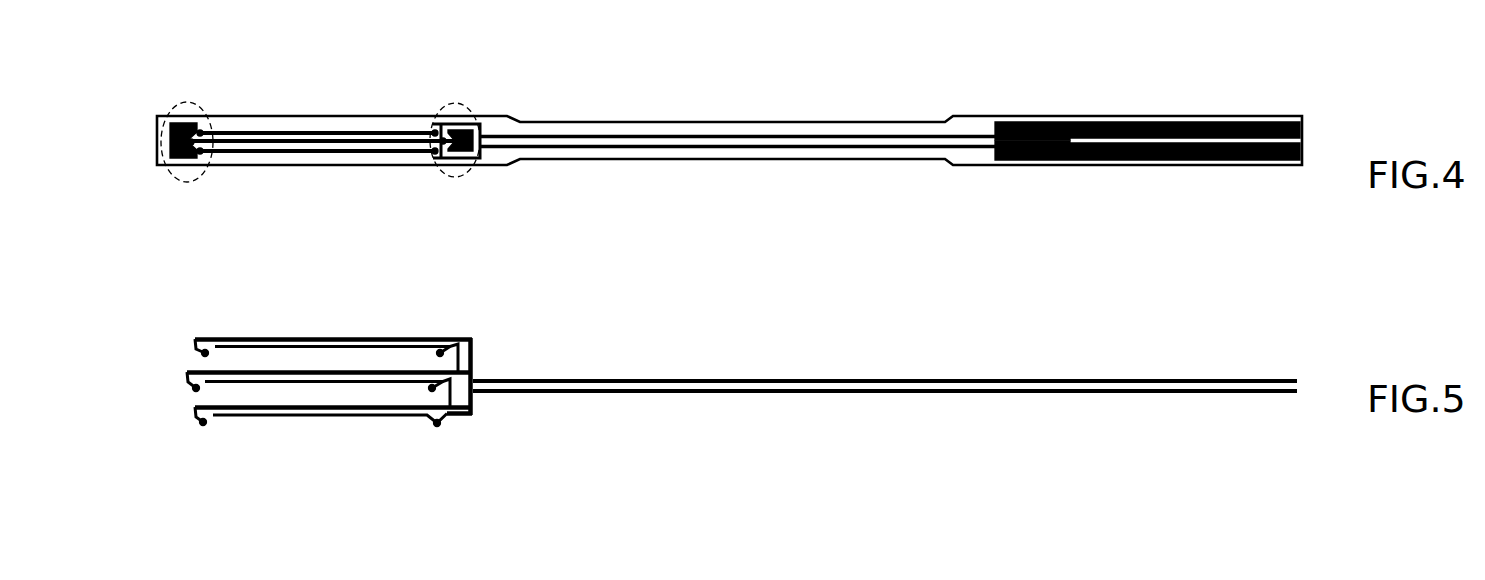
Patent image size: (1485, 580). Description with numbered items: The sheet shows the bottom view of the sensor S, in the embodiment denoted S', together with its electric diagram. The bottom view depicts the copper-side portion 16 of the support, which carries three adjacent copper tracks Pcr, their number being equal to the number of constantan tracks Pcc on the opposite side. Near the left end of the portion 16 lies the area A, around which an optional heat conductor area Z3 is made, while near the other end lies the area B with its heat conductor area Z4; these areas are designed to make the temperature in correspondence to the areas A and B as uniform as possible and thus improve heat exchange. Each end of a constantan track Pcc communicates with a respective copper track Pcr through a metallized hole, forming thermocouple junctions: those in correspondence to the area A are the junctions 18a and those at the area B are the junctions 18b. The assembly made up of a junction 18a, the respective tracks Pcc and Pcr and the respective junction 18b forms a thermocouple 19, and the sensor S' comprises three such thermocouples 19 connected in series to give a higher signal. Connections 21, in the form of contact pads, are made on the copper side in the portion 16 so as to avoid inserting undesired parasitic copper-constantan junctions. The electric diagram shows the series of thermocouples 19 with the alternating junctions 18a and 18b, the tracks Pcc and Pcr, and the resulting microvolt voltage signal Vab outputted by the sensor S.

In FIG. 4, the copper-side portion 16 is at (557, 143).
In FIG. 4, the thermocouple junctions 18a is at (196, 134).
In FIG. 5, the thermocouple junctions 18a is at (203, 352).
In FIG. 4, the thermocouple junctions 18b is at (434, 152).
In FIG. 5, the thermocouple junctions 18b is at (440, 354).
In FIG. 5, the thermocouple 19 is at (700, 385).
In FIG. 4, the connections 21 is at (1252, 122).
In FIG. 4, the area A is at (200, 103).
In FIG. 4, the area B is at (433, 110).
In FIG. 4, the heat conductor area Z3 is at (181, 121).
In FIG. 4, the heat conductor area Z4 is at (464, 105).
In FIG. 4, the copper tracks Pcr is at (267, 133).
In FIG. 5, the copper tracks Pcr is at (357, 405).
In FIG. 5, the constantan tracks Pcc is at (245, 346).
In FIG. 4, the sensor S is at (1090, 99).
In FIG. 5, the voltage signal Vab is at (1309, 352).